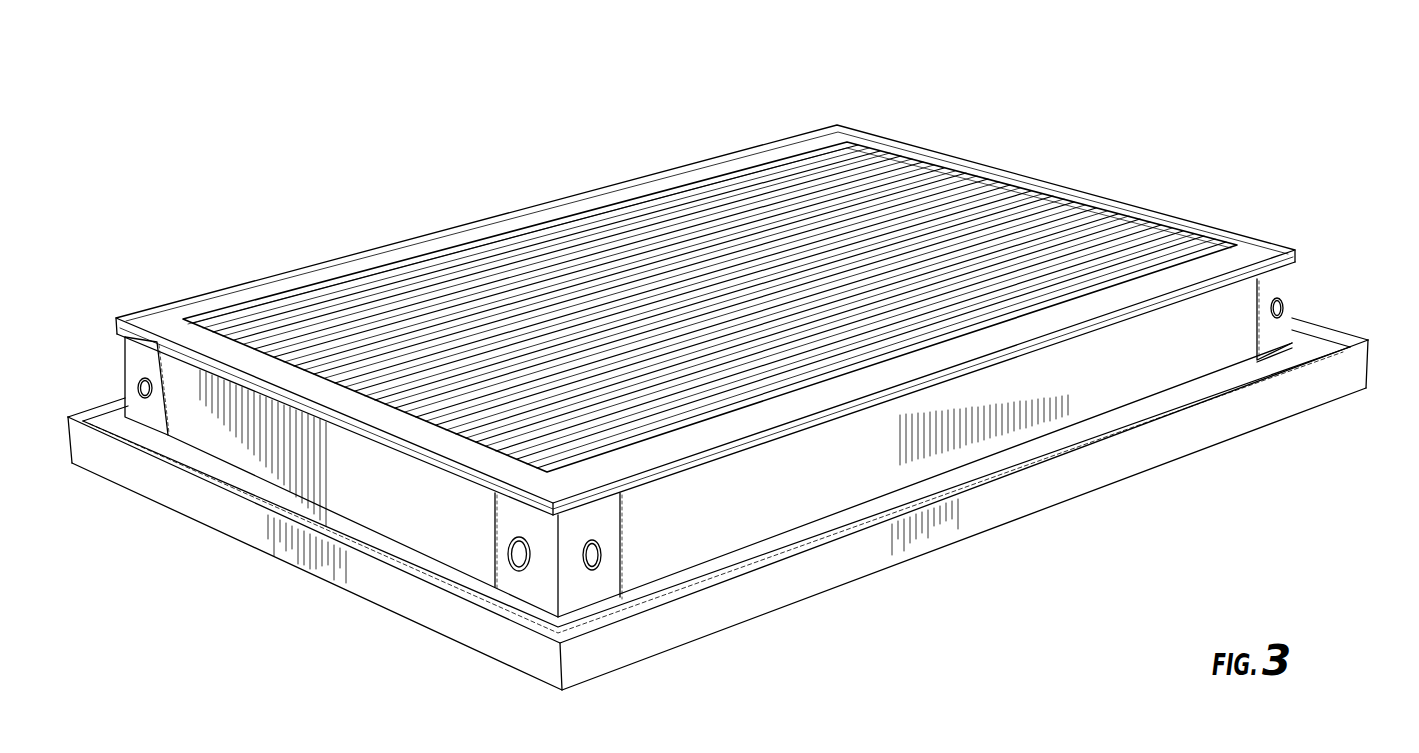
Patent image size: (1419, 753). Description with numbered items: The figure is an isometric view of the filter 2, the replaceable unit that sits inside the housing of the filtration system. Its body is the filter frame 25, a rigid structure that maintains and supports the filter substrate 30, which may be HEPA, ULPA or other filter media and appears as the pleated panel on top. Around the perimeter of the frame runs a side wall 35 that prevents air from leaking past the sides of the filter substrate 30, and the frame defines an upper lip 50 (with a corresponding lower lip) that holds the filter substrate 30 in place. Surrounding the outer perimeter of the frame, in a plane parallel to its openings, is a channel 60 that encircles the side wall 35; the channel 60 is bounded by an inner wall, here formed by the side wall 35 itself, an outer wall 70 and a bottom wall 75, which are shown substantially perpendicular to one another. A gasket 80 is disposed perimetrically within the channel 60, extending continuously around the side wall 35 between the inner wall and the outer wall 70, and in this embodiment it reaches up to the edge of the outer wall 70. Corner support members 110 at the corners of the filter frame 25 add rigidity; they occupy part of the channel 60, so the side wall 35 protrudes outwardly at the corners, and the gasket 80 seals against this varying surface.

The filter 2 is at (104, 160).
The filter frame 25 is at (1300, 278).
The filter substrate 30 is at (992, 208).
The side wall 35 is at (177, 400).
The upper lip 50 is at (397, 250).
The channel 60 is at (776, 588).
The outer wall 70 is at (430, 608).
The bottom wall 75 is at (230, 538).
The gasket 80 is at (1312, 340).
The corner support members 110 is at (577, 595).